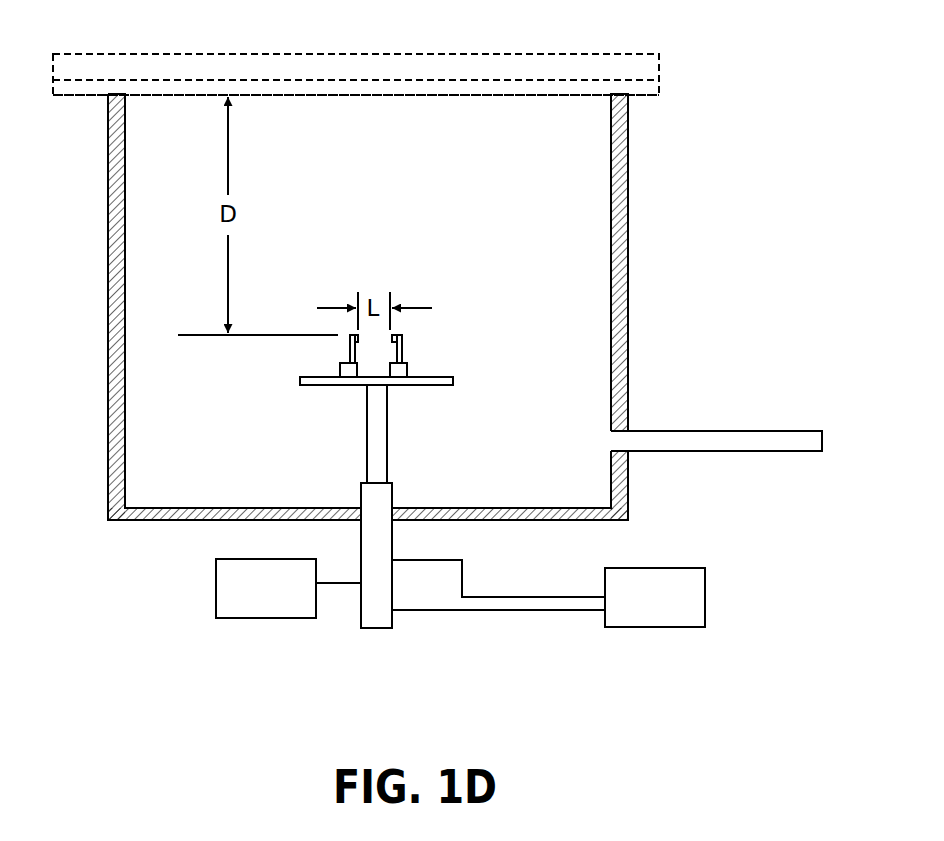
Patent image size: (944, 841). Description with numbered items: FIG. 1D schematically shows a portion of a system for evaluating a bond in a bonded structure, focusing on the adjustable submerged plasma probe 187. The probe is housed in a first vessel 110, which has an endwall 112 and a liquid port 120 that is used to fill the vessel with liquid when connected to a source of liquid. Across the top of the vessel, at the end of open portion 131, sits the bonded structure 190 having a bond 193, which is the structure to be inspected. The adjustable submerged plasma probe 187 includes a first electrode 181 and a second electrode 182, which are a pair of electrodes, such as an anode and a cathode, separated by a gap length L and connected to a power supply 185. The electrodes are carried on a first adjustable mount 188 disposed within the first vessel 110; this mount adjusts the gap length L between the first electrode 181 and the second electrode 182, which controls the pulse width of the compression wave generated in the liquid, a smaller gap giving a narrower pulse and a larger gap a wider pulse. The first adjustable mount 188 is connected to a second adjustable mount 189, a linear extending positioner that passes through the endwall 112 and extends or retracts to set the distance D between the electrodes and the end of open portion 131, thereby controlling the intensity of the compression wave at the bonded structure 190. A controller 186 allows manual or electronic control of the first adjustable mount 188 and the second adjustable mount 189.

The first vessel 110 is at (117, 90).
The endwall 112 is at (164, 523).
The liquid port 120 is at (793, 427).
The end of open portion 131 is at (534, 99).
The first electrode 181 is at (343, 349).
The second electrode 182 is at (406, 349).
The power supply 185 is at (548, 593).
The controller 186 is at (288, 588).
The adjustable submerged plasma probe 187 is at (401, 643).
The first adjustable mount 188 is at (438, 388).
The second adjustable mount 189 is at (351, 476).
The bonded structure 190 is at (662, 76).
The bond 193 is at (80, 77).